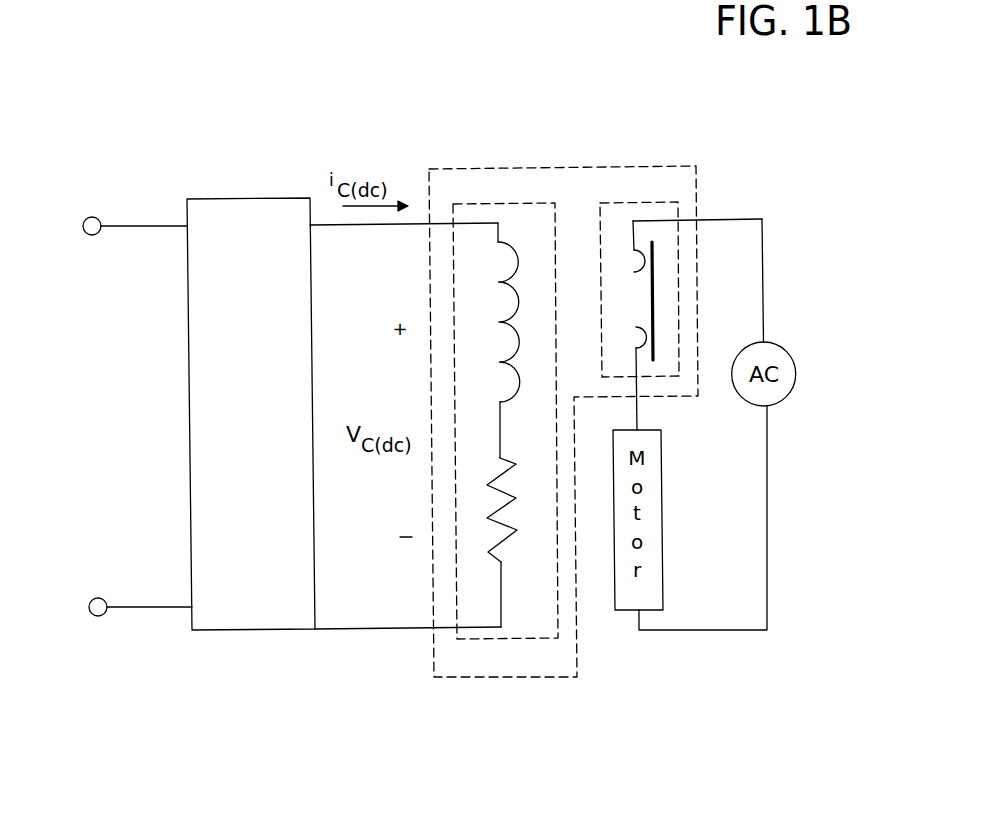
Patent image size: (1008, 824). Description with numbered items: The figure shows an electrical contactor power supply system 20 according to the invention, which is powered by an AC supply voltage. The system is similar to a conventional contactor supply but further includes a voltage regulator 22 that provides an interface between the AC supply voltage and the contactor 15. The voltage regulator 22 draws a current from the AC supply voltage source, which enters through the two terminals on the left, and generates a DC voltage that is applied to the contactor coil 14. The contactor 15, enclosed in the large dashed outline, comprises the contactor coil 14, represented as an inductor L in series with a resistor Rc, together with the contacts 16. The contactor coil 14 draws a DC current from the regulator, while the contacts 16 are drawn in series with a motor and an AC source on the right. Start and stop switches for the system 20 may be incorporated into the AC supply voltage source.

The electrical contactor power supply system 20 is at (222, 165).
The voltage regulator 22 is at (267, 452).
The contactor coil 14 is at (487, 200).
The contactor 15 is at (539, 168).
The contacts 16 is at (642, 200).